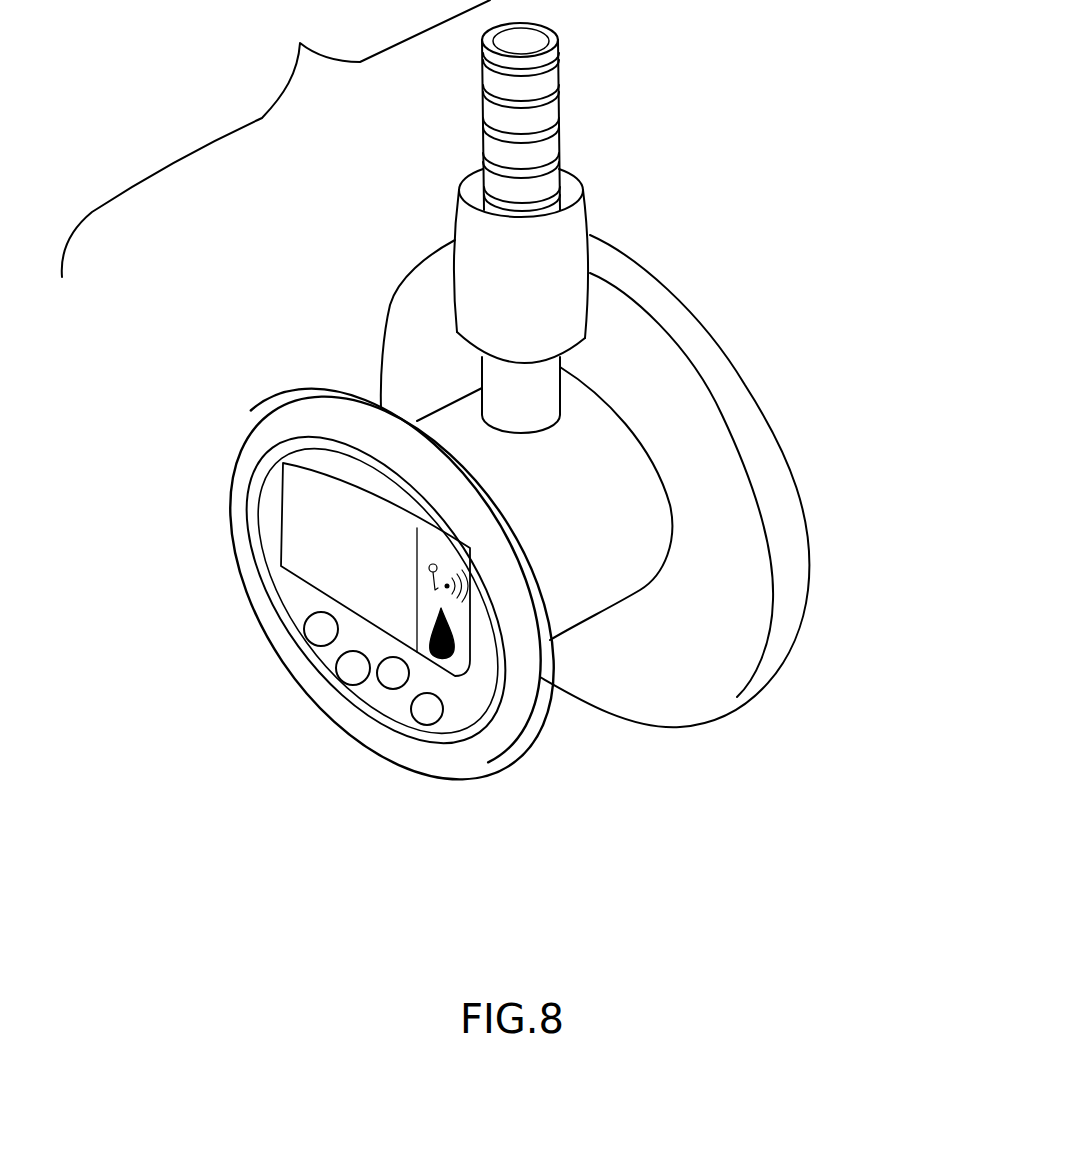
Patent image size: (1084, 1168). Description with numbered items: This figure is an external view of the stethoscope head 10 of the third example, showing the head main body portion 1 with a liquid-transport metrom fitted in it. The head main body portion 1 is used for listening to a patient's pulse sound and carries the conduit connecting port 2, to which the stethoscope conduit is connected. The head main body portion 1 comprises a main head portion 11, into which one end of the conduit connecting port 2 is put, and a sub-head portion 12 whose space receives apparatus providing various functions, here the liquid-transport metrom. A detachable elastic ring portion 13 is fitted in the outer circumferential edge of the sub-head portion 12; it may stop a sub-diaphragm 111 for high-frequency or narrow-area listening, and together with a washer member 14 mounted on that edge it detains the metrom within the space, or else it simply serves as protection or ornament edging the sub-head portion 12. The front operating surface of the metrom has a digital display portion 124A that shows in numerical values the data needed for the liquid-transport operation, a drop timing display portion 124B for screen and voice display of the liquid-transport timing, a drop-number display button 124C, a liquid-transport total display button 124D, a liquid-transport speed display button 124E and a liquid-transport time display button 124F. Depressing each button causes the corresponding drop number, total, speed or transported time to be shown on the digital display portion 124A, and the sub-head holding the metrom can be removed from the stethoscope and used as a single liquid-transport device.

The head main body portion 1 is at (343, 352).
The conduit connecting port 2 is at (553, 108).
The stethoscope head 10 is at (276, 138).
The main head portion 11 is at (703, 677).
The sub-head portion 12 is at (527, 567).
The detachable elastic ring portion 13 is at (270, 437).
The washer member 14 is at (316, 447).
The sub-diaphragm 111 is at (763, 450).
The digital display portion 124A is at (318, 537).
The drop timing display portion 124B is at (459, 649).
The drop-number display button 124C is at (316, 628).
The liquid-transport total display button 124D is at (348, 668).
The liquid-transport speed display button 124E is at (392, 676).
The liquid-transport time display button 124F is at (428, 708).